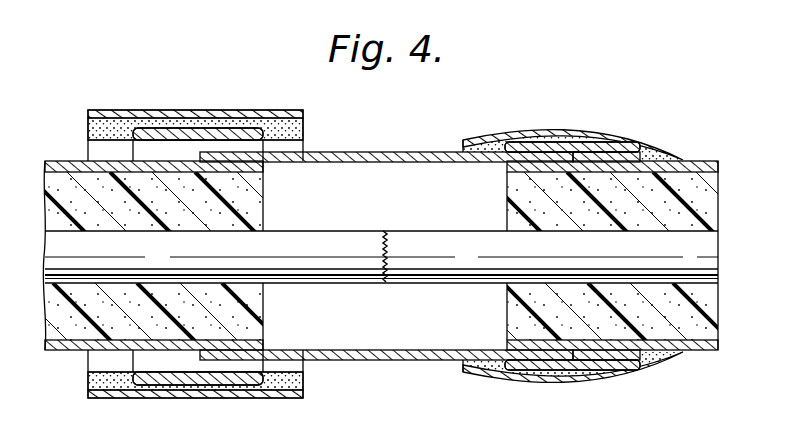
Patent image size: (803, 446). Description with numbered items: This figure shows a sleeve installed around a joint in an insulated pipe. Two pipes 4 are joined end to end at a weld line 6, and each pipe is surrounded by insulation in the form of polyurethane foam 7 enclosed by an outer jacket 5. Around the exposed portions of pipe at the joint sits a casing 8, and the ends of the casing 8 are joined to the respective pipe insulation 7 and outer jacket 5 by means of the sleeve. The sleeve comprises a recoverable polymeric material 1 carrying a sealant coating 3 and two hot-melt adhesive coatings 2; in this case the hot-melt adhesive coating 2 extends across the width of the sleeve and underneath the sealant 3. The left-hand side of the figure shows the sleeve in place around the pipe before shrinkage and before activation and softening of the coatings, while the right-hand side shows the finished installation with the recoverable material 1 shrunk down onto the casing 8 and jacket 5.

The recoverable polymeric material 1 is at (119, 110).
The hot-melt adhesive coating 2 is at (309, 124).
The sealant coating 3 is at (186, 147).
The pipe 4 is at (680, 268).
The outer jacket 5 is at (70, 351).
The weld line 6 is at (387, 232).
The polyurethane foam 7 is at (71, 194).
The casing 8 is at (392, 362).